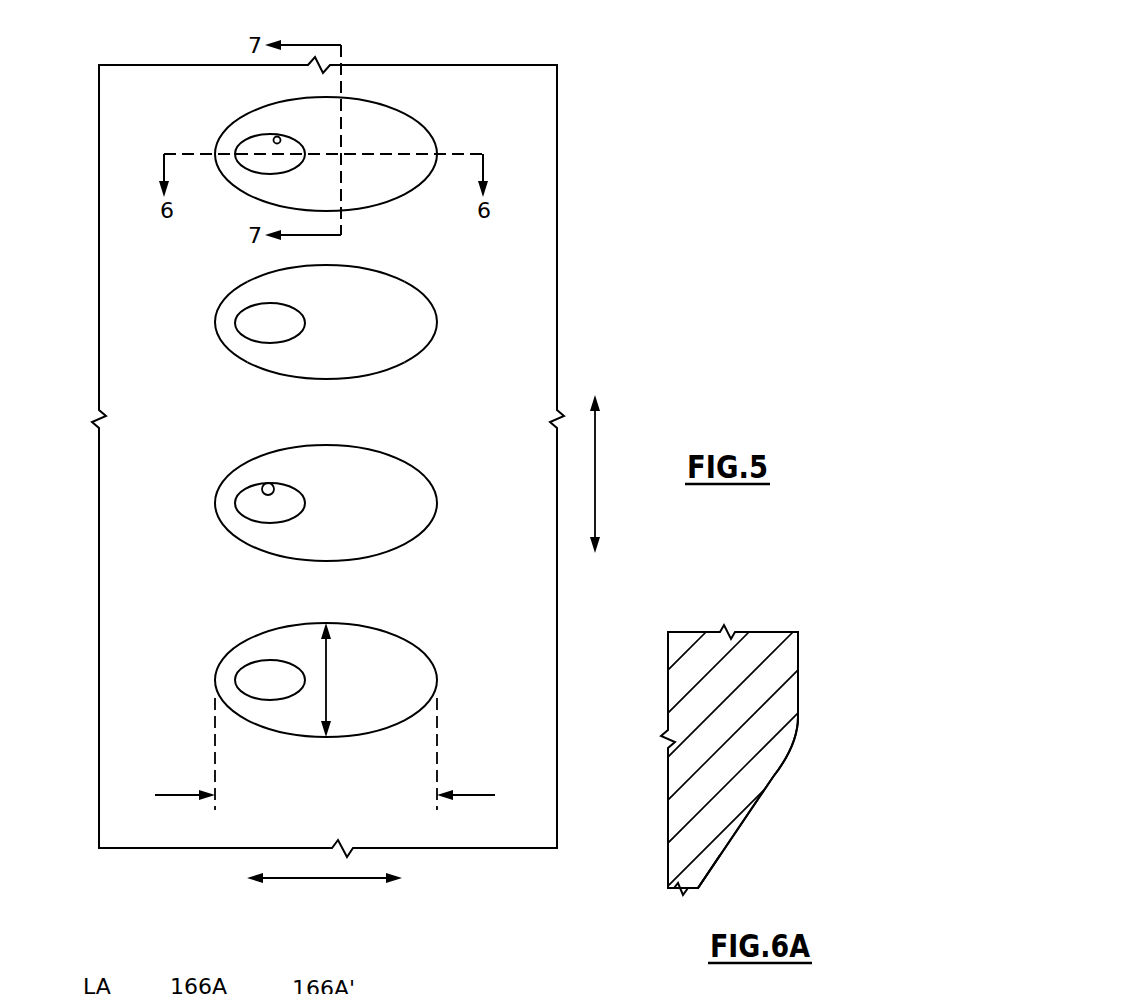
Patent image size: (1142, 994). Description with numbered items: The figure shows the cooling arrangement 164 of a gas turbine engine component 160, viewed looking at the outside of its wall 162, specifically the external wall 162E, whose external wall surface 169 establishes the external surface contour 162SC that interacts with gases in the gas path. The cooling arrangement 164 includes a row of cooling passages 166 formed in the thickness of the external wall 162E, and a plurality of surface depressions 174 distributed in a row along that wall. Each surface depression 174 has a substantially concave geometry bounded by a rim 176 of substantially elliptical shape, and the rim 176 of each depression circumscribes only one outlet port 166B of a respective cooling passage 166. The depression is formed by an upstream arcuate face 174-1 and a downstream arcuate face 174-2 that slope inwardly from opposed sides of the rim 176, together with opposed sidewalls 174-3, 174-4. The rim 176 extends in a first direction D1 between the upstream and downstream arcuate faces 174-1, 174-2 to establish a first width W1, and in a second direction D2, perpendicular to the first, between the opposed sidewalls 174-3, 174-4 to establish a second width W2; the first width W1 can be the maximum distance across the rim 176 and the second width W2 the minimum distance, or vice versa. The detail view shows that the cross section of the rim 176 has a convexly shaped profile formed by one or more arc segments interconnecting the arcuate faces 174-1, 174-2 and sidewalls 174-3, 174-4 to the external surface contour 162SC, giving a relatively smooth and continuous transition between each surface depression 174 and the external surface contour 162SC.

In FIG. 5, the component 160 is at (345, 433).
In FIG. 5, the cooling arrangement 164 is at (345, 433).
In FIG. 5, the wall 162 is at (345, 433).
In FIG. 5, the external surface contour 162SC is at (158, 52).
In FIG. 6A, the external surface contour 162SC is at (800, 660).
In FIG. 5, the external wall 162E is at (543, 182).
In FIG. 5, the external wall surface 169 is at (540, 270).
In FIG. 5, the surface depression 174 is at (319, 383).
In FIG. 6A, the surface depression 174 is at (812, 905).
In FIG. 5, the upstream arcuate face 174-1 is at (220, 323).
In FIG. 6A, the upstream arcuate face 174-1 is at (817, 832).
In FIG. 5, the downstream arcuate face 174-2 is at (417, 327).
In FIG. 6A, the downstream arcuate face 174-2 is at (817, 832).
In FIG. 5, the sidewall 174-3 is at (340, 365).
In FIG. 6A, the sidewall 174-3 is at (817, 832).
In FIG. 5, the sidewall 174-4 is at (343, 283).
In FIG. 6A, the sidewall 174-4 is at (768, 783).
In FIG. 5, the rim 176 is at (319, 383).
In FIG. 6A, the rim 176 is at (796, 737).
In FIG. 5, the cooling passage 166 is at (238, 146).
In FIG. 5, the outlet port 166B is at (277, 136).
In FIG. 5, the first width W1 is at (172, 793).
In FIG. 5, the second width W2 is at (327, 670).
In FIG. 5, the first direction D1 is at (300, 880).
In FIG. 5, the second direction D2 is at (598, 482).